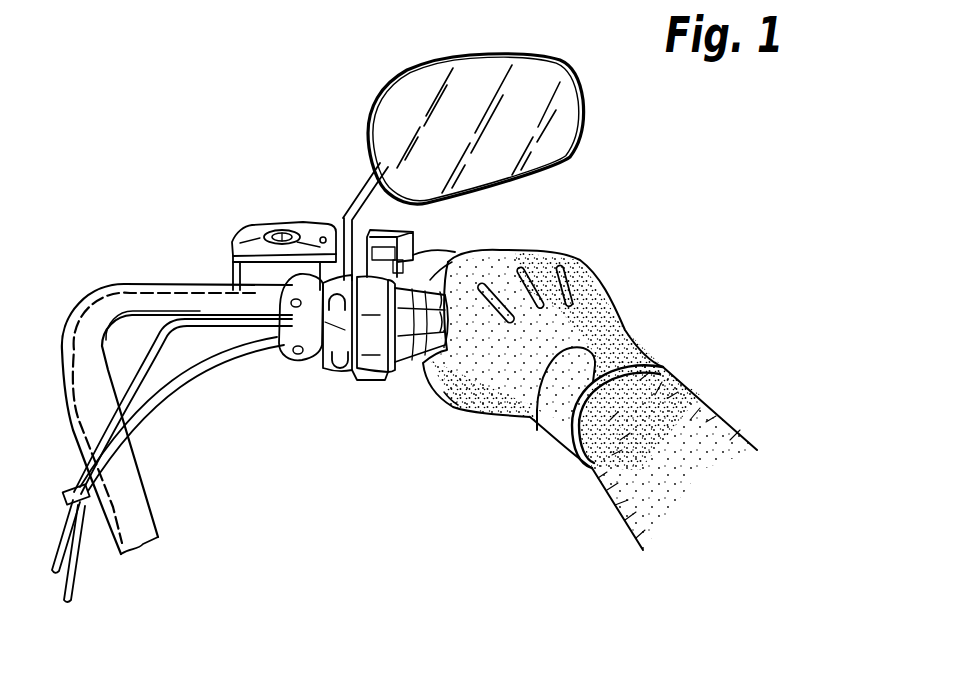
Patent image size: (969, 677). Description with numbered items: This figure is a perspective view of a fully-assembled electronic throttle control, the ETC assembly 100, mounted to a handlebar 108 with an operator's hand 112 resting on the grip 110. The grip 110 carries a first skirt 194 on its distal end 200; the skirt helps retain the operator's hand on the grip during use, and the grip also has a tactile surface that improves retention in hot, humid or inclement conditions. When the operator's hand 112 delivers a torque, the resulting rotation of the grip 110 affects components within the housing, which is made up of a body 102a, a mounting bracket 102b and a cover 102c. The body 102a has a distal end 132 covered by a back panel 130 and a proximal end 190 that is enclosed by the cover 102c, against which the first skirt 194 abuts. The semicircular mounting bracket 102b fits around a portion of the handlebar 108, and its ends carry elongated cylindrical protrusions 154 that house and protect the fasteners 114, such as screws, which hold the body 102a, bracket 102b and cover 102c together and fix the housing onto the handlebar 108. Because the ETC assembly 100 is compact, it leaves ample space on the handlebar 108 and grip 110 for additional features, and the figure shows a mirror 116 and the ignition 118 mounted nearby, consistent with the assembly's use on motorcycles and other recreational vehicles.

The ETC assembly 100 is at (320, 183).
The mirrors 116 is at (378, 95).
The back panel 130 is at (356, 192).
The ignition 118 is at (241, 232).
The cylindrical protrusion 154 is at (318, 227).
The handlebar 108 is at (167, 298).
The fasteners 114 is at (412, 238).
The cover 102c is at (442, 272).
The operator's hand 112 is at (618, 338).
The first skirt 194 is at (436, 301).
The distal end 200 is at (442, 320).
The mounting bracket 102b is at (319, 368).
The distal end 132 is at (364, 380).
The body 102a is at (371, 375).
The proximal end 190 is at (390, 386).
The grip 110 is at (453, 407).